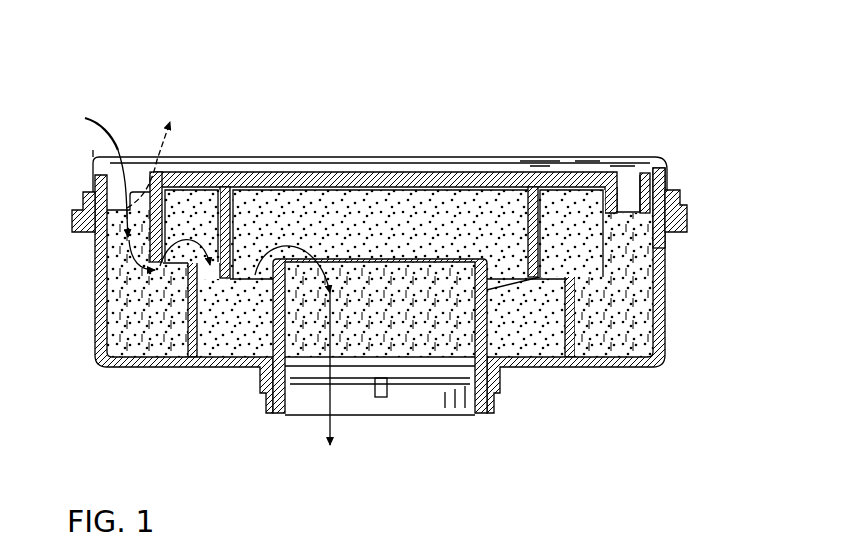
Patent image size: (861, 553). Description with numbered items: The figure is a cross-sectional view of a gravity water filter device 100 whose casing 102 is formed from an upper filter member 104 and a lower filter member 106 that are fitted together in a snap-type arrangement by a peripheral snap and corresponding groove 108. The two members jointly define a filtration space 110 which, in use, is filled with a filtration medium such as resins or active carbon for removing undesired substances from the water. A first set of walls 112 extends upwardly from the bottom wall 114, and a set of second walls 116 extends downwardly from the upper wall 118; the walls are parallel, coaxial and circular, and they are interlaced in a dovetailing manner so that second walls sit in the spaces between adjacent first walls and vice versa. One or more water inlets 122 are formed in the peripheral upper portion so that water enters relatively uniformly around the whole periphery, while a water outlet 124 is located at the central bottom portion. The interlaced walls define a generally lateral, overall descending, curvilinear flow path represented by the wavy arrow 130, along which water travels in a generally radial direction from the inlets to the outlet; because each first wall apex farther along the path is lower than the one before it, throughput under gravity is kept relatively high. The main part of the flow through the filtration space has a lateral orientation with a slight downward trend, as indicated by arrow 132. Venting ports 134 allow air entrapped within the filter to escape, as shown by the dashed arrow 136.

The filter device 100 is at (613, 55).
The casing 102 is at (667, 243).
The upper filter member 104 is at (482, 148).
The lower filter member 106 is at (563, 370).
The peripheral snap and corresponding groove 108 is at (88, 182).
The filtration space 110 is at (392, 243).
The first set of walls 112 is at (565, 316).
The bottom wall 114 is at (132, 368).
The second walls 116 is at (602, 257).
The upper wall 118 is at (423, 155).
The water inlets 122 is at (97, 152).
The water outlet 124 is at (405, 405).
The wavy arrow 130 is at (227, 367).
The arrow 132 is at (595, 267).
The venting ports 134 is at (630, 206).
The dashed arrow 136 is at (152, 135).